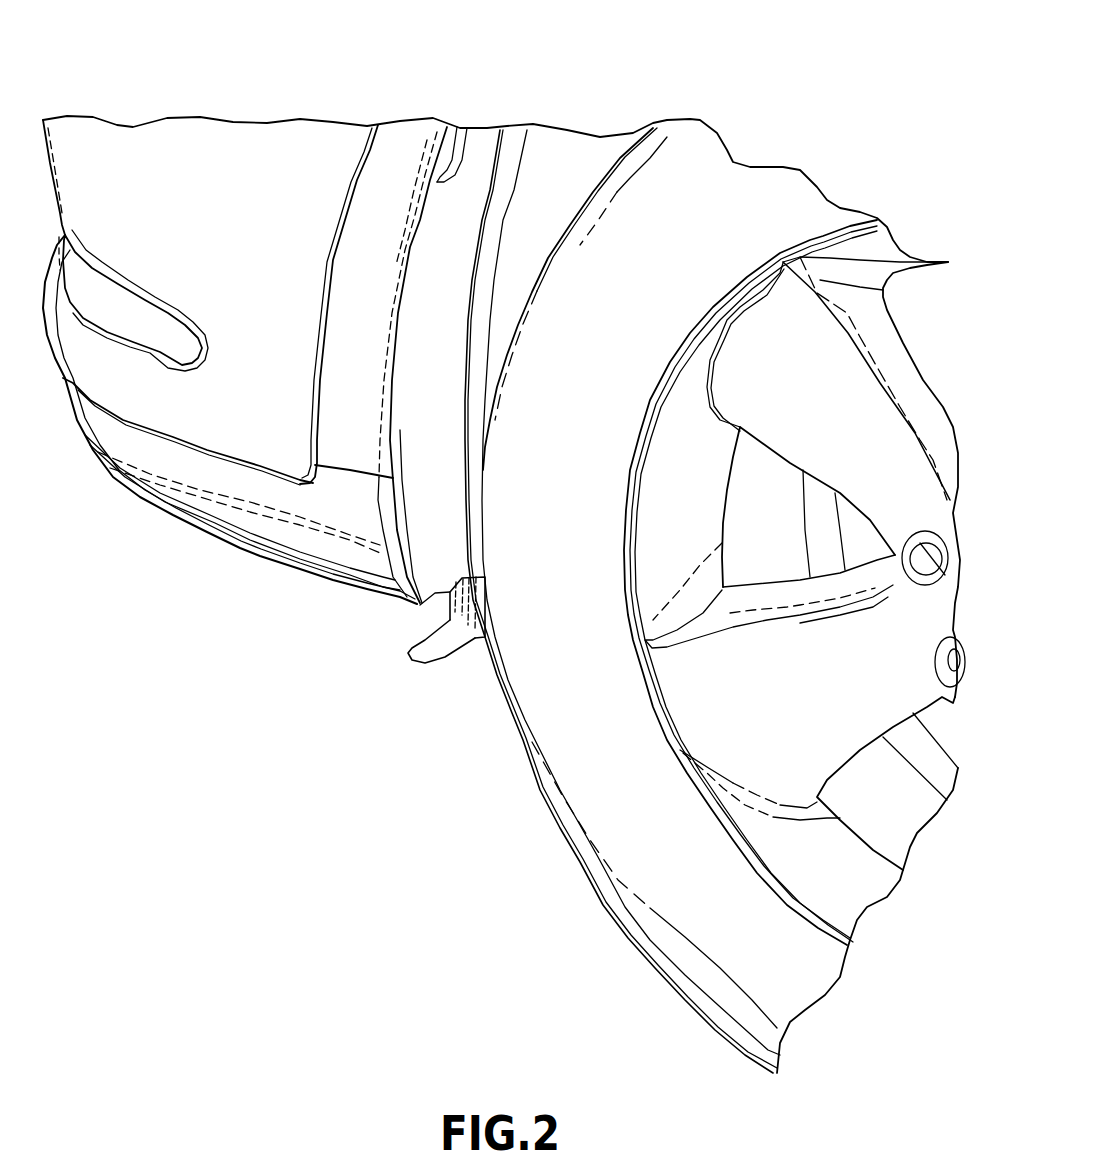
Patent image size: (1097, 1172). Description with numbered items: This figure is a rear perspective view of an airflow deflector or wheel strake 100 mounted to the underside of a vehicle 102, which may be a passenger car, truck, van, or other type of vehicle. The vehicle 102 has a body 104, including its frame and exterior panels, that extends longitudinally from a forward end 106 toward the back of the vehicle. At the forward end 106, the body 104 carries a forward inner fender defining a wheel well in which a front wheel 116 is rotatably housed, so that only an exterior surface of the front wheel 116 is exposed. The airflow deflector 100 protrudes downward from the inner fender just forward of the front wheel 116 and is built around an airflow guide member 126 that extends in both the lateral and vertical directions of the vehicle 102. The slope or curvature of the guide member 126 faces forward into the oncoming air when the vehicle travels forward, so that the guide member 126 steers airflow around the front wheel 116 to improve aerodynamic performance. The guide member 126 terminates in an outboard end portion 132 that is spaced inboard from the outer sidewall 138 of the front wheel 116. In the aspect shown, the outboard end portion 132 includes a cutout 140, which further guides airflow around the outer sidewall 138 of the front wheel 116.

The airflow deflector 100 is at (423, 688).
The vehicle 102 is at (495, 305).
The body 104 is at (715, 547).
The forward end 106 is at (228, 339).
The front wheel 116 is at (622, 601).
The airflow guide member 126 is at (472, 673).
The outboard end portion 132 is at (441, 710).
The outer sidewall 138 is at (654, 896).
The cutout 140 is at (370, 629).